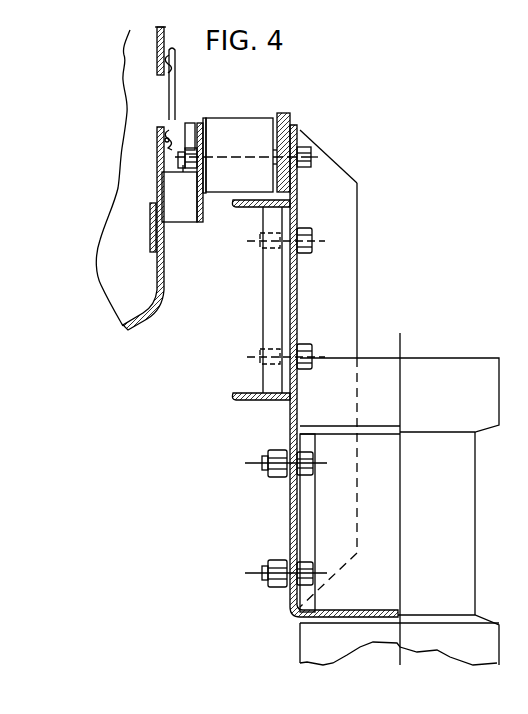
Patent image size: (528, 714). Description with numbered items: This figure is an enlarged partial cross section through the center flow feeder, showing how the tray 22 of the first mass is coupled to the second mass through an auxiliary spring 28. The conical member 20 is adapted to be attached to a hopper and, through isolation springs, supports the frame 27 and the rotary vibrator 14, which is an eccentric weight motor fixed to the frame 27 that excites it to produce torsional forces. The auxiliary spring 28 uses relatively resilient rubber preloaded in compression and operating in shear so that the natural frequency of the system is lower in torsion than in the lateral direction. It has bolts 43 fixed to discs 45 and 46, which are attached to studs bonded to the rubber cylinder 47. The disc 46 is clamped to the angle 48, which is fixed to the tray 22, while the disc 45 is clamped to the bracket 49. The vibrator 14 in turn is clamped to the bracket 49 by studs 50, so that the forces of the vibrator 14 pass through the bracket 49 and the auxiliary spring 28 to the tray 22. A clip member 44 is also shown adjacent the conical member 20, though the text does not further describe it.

The rotary vibrator 14 is at (443, 365).
The conical member 20 is at (157, 52).
The tray 22 is at (148, 312).
The frame 27 is at (237, 400).
The auxiliary spring 28 is at (226, 126).
The bolt 43 is at (303, 153).
The clip fastener 44 is at (183, 143).
The disc 45 is at (290, 118).
The disc 46 is at (205, 118).
The rubber cylinder 47 is at (220, 187).
The angle 48 is at (183, 218).
The bracket 49 is at (347, 313).
The stud 50 is at (262, 463).